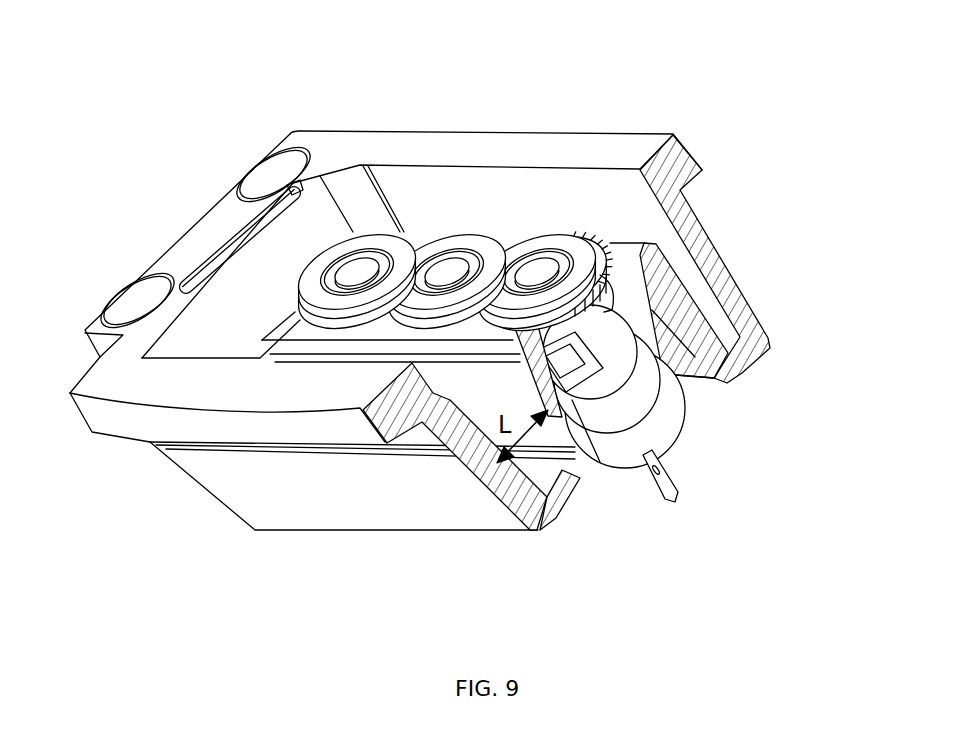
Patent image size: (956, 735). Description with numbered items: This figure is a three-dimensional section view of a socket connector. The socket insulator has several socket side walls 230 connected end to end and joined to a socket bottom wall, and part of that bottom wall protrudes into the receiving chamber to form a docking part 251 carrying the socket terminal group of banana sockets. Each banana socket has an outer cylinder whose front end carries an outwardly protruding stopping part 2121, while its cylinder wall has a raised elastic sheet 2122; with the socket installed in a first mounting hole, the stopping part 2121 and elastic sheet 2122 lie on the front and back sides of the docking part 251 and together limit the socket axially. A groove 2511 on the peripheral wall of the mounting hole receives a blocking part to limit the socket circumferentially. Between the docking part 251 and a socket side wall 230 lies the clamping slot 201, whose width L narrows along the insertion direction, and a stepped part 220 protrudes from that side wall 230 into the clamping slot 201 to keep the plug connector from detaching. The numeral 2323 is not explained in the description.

The clamping slot 201 is at (485, 417).
The stepped part 220 is at (450, 410).
The socket side wall 230 is at (327, 493).
The docking part 251 is at (428, 247).
The stopping part 2121 is at (490, 286).
The groove 2511 is at (596, 274).
The stop block 2323 is at (605, 299).
The elastic sheet 2122 is at (567, 360).